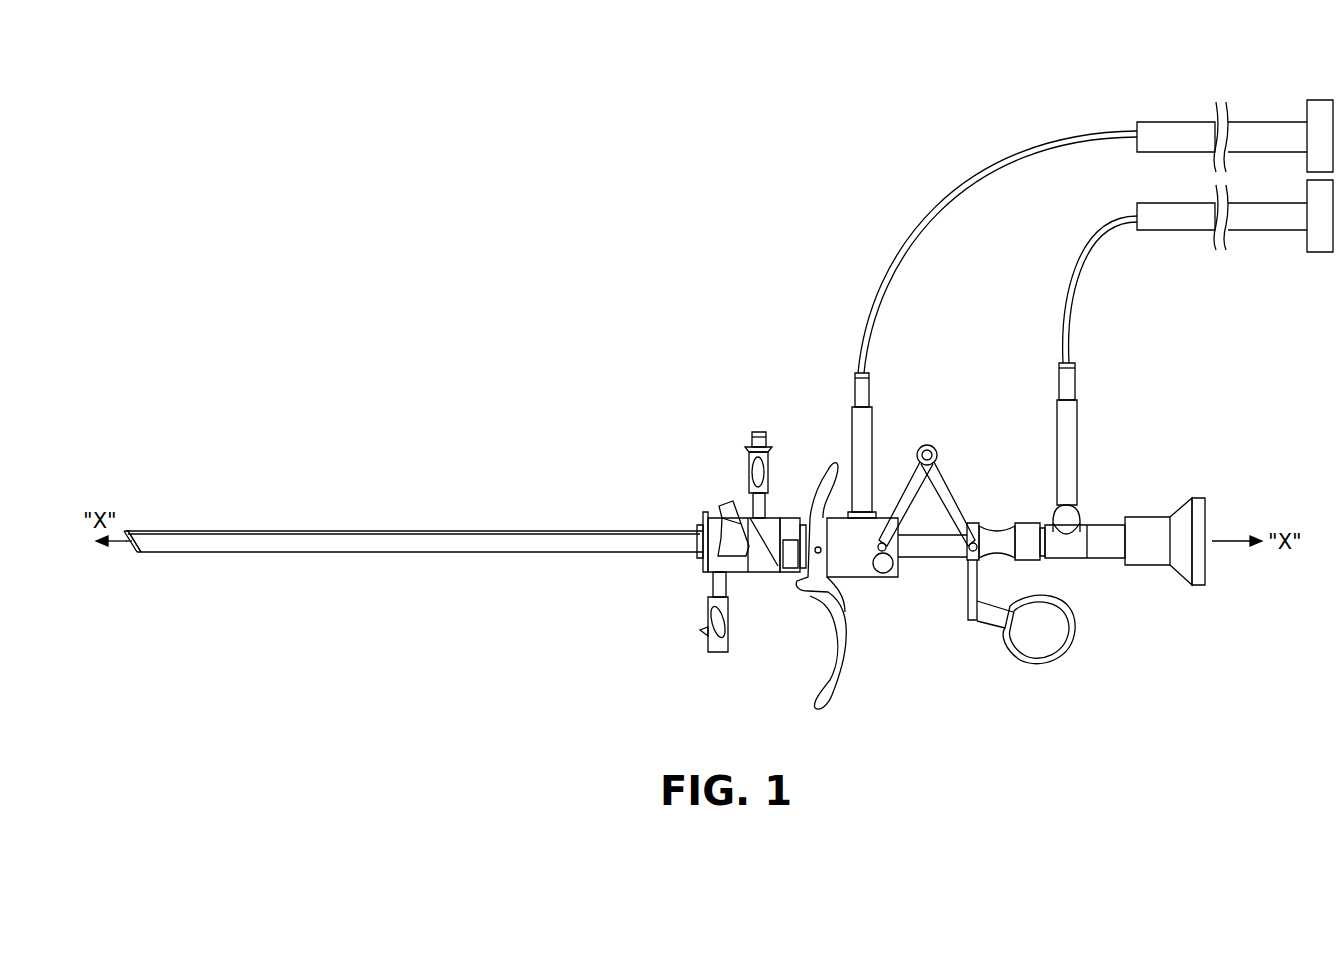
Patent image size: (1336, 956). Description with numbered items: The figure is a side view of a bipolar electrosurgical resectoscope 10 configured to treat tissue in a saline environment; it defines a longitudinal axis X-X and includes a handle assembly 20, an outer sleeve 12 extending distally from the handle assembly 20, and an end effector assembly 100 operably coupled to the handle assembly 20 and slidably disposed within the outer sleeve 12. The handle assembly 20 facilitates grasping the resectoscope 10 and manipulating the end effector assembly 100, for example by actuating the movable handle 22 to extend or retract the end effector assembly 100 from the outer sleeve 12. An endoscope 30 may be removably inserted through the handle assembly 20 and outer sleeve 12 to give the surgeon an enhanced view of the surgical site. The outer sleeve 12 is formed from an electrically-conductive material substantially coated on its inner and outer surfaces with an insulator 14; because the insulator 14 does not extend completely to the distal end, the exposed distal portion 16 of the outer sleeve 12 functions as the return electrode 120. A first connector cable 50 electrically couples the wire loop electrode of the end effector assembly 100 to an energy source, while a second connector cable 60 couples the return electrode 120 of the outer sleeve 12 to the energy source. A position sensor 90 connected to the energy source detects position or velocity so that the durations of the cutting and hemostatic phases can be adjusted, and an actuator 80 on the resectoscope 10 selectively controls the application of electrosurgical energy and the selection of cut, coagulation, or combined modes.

The resectoscope 10 is at (558, 362).
The outer sleeve 12 is at (376, 567).
The insulator 14 is at (412, 530).
The distal portion 16 is at (130, 527).
The handle assembly 20 is at (928, 603).
The movable handle 22 is at (1033, 665).
The endoscope 30 is at (1203, 603).
The first connector cable 50 is at (1100, 297).
The second connector cable 60 is at (899, 226).
The actuator 80 is at (727, 503).
The position sensor 90 is at (928, 443).
The end effector assembly 100 is at (128, 547).
The return electrode 120 is at (138, 556).